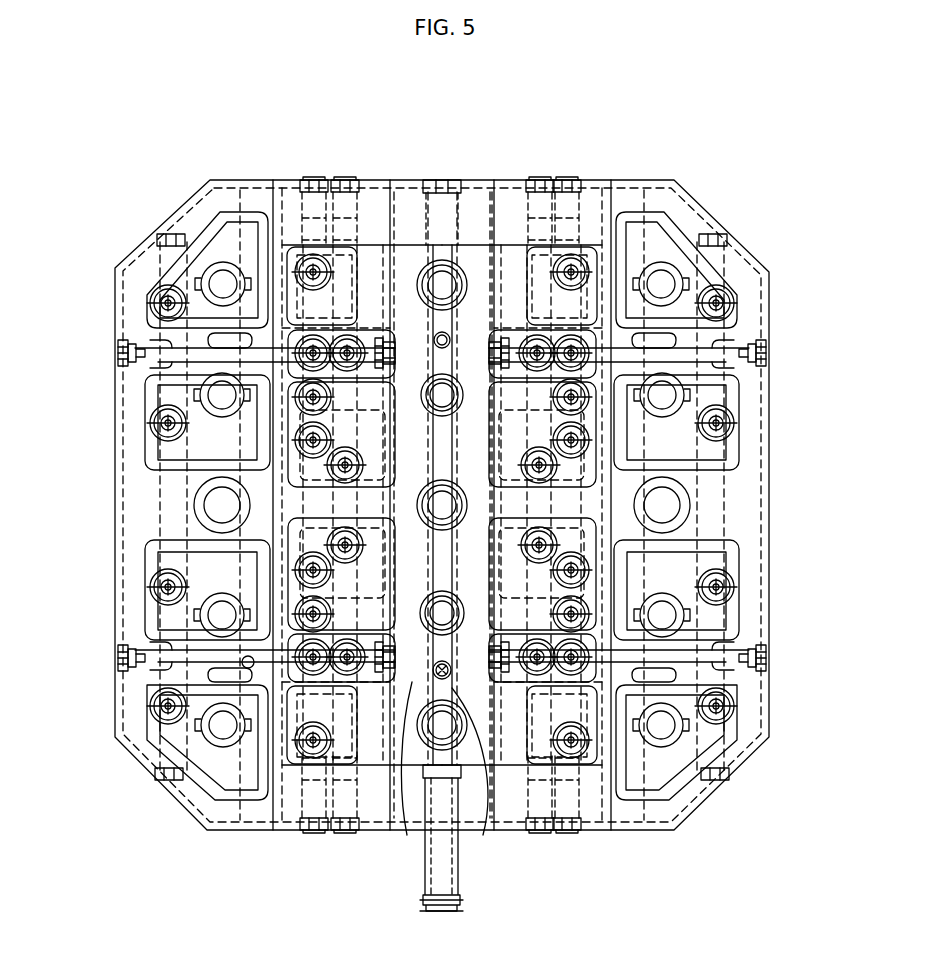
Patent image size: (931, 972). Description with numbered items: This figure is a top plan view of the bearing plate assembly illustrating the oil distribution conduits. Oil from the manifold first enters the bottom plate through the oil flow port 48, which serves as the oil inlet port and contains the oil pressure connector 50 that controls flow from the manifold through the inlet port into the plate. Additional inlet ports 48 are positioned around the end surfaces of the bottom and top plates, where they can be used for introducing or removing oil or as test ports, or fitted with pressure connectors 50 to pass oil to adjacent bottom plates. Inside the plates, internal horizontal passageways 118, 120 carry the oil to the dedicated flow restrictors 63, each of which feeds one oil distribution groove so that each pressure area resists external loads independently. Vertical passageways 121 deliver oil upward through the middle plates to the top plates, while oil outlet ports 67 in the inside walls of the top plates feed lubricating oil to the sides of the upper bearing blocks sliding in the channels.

The oil flow port 48 is at (345, 183).
The oil pressure connector 50 is at (460, 888).
The flow restrictor 63 is at (313, 254).
The oil outlet port 67 is at (390, 369).
The internal horizontal passageway 118 is at (408, 838).
The internal horizontal passageway 120 is at (455, 800).
The vertical passageway 121 is at (248, 672).